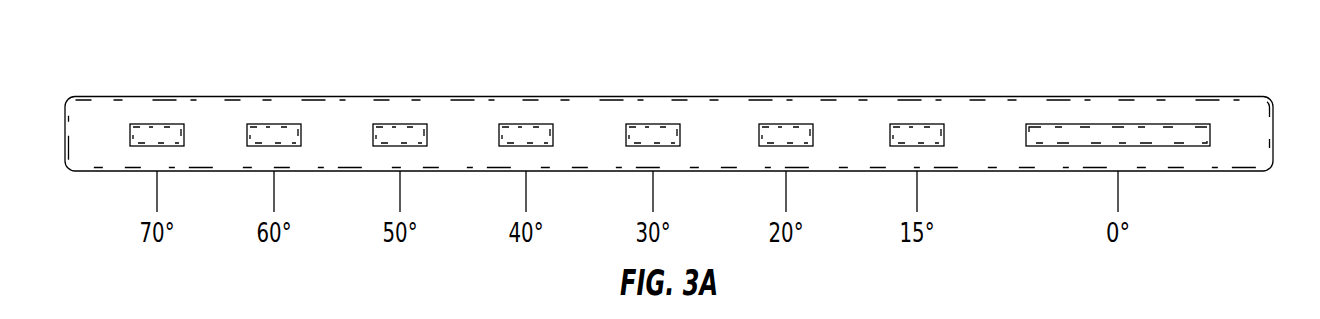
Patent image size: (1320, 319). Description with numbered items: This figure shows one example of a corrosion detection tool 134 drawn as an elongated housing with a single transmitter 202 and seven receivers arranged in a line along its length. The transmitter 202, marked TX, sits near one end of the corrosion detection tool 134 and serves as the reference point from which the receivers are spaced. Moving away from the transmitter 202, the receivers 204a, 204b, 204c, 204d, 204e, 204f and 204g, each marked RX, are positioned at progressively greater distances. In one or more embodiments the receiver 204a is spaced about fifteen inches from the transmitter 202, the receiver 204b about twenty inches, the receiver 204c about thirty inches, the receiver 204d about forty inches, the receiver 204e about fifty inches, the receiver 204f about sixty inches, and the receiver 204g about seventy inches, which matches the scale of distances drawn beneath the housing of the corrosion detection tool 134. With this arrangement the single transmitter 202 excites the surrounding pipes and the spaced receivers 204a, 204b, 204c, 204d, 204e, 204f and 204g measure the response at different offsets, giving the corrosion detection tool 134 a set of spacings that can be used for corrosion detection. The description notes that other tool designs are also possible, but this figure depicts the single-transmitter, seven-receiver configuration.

The corrosion detection tool 134 is at (1205, 96).
The transmitter 202 is at (1043, 124).
The receiver 204g is at (138, 124).
The receiver 204f is at (255, 124).
The receiver 204e is at (381, 124).
The receiver 204d is at (507, 124).
The receiver 204c is at (634, 124).
The receiver 204b is at (767, 124).
The receiver 204a is at (898, 124).